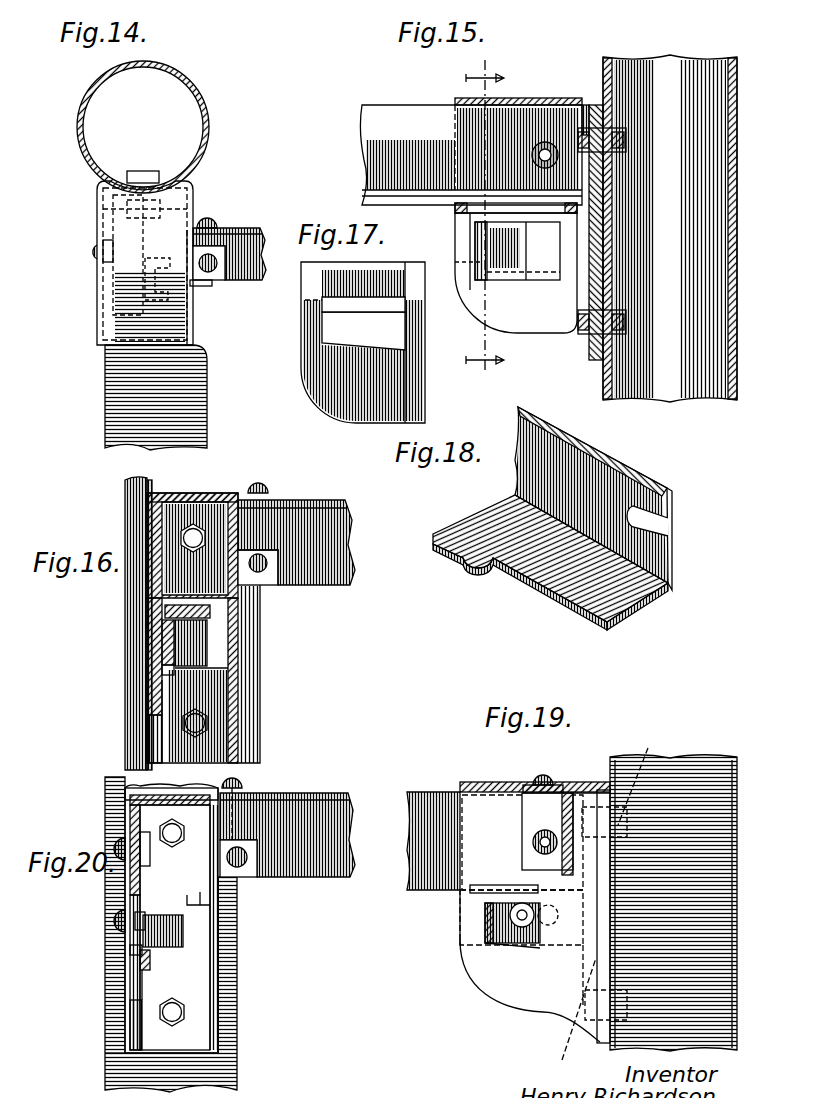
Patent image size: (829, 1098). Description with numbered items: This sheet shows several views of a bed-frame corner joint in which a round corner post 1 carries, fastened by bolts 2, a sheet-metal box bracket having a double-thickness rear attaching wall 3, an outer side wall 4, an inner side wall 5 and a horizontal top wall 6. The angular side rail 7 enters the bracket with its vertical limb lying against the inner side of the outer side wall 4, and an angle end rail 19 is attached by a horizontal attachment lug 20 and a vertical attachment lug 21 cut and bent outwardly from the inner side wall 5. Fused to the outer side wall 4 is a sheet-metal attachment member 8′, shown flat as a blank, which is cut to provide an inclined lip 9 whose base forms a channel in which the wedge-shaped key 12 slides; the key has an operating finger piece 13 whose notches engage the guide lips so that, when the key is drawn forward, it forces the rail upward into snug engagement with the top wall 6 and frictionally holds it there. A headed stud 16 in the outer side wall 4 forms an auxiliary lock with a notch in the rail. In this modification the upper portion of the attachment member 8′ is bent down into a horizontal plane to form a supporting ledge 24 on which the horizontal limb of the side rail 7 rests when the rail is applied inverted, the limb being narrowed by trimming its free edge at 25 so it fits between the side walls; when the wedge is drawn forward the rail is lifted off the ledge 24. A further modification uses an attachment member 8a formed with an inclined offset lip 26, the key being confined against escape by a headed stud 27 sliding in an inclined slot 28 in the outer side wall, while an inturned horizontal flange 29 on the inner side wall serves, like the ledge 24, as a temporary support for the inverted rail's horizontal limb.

In FIG. 14, the corner post 1 is at (206, 112).
In FIG. 15, the corner post 1 is at (698, 143).
In FIG. 16, the corner post 1 is at (130, 490).
In FIG. 20, the corner post 1 is at (171, 934).
In FIG. 19, the corner post 1 is at (673, 903).
In FIG. 14, the bolts 2 is at (178, 205).
In FIG. 15, the bolts 2 is at (585, 104).
In FIG. 16, the bolts 2 is at (198, 534).
In FIG. 20, the bolts 2 is at (176, 836).
In FIG. 19, the bolts 2 is at (608, 902).
In FIG. 14, the rear attaching wall 3 is at (118, 200).
In FIG. 15, the rear attaching wall 3 is at (584, 246).
In FIG. 16, the rear attaching wall 3 is at (180, 567).
In FIG. 20, the rear attaching wall 3 is at (195, 919).
In FIG. 19, the rear attaching wall 3 is at (543, 1012).
In FIG. 14, the outer side wall 4 is at (97, 330).
In FIG. 16, the outer side wall 4 is at (152, 668).
In FIG. 20, the outer side wall 4 is at (128, 950).
In FIG. 19, the outer side wall 4 is at (522, 842).
In FIG. 14, the inner side wall 5 is at (193, 322).
In FIG. 15, the inner side wall 5 is at (585, 276).
In FIG. 16, the inner side wall 5 is at (240, 634).
In FIG. 20, the inner side wall 5 is at (212, 934).
In FIG. 19, the inner side wall 5 is at (566, 1026).
In FIG. 14, the horizontal top wall 6 is at (132, 267).
In FIG. 15, the horizontal top wall 6 is at (516, 98).
In FIG. 16, the horizontal top wall 6 is at (196, 493).
In FIG. 20, the horizontal top wall 6 is at (140, 790).
In FIG. 19, the horizontal top wall 6 is at (486, 782).
In FIG. 14, the side rail 7 is at (170, 395).
In FIG. 16, the side rail 7 is at (150, 545).
In FIG. 18, the side rail 7 is at (526, 486).
In FIG. 20, the side rail 7 is at (133, 808).
In FIG. 19, the side rail 7 is at (421, 795).
In FIG. 15, the attachment member 8′ is at (498, 308).
In FIG. 17, the attachment member 8′ is at (363, 342).
In FIG. 16, the attachment member 8′ is at (164, 698).
In FIG. 20, the attachment member 8a is at (143, 990).
In FIG. 19, the attachment member 8a is at (482, 977).
In FIG. 15, the inclined lip 9 is at (540, 277).
In FIG. 16, the inclined lip 9 is at (182, 672).
In FIG. 15, the wedge-shaped key 12 is at (515, 246).
In FIG. 16, the wedge-shaped key 12 is at (152, 645).
In FIG. 19, the wedge-shaped key 12 is at (485, 925).
In FIG. 14, the operating finger piece 13 is at (142, 300).
In FIG. 15, the operating finger piece 13 is at (488, 242).
In FIG. 16, the operating finger piece 13 is at (192, 645).
In FIG. 20, the operating finger piece 13 is at (158, 918).
In FIG. 19, the operating finger piece 13 is at (487, 912).
In FIG. 14, the headed stud 16 is at (92, 250).
In FIG. 15, the headed stud 16 is at (548, 142).
In FIG. 20, the headed stud 16 is at (128, 850).
In FIG. 19, the headed stud 16 is at (535, 851).
In FIG. 14, the angle end rail 19 is at (245, 228).
In FIG. 16, the angle end rail 19 is at (298, 540).
In FIG. 20, the angle end rail 19 is at (298, 826).
In FIG. 19, the angle end rail 19 is at (570, 793).
In FIG. 14, the horizontal attachment lug 20 is at (215, 272).
In FIG. 16, the horizontal attachment lug 20 is at (264, 496).
In FIG. 20, the horizontal attachment lug 20 is at (244, 788).
In FIG. 19, the horizontal attachment lug 20 is at (553, 784).
In FIG. 14, the vertical attachment lug 21 is at (234, 228).
In FIG. 20, the vertical attachment lug 21 is at (250, 872).
In FIG. 19, the vertical attachment lug 21 is at (565, 835).
In FIG. 14, the supporting ledge 24 is at (195, 283).
In FIG. 15, the supporting ledge 24 is at (455, 208).
In FIG. 17, the supporting ledge 24 is at (396, 272).
In FIG. 16, the supporting ledge 24 is at (210, 612).
In FIG. 15, the trimmed edge 25 is at (510, 195).
In FIG. 18, the trimmed edge 25 is at (556, 592).
In FIG. 20, the inclined offset lip 26 is at (151, 958).
In FIG. 19, the inclined offset lip 26 is at (512, 946).
In FIG. 20, the headed stud 27 is at (125, 921).
In FIG. 19, the headed stud 27 is at (546, 912).
In FIG. 19, the inclined slot 28 is at (558, 920).
In FIG. 20, the inturned horizontal flange 29 is at (193, 886).
In FIG. 19, the inturned horizontal flange 29 is at (476, 884).